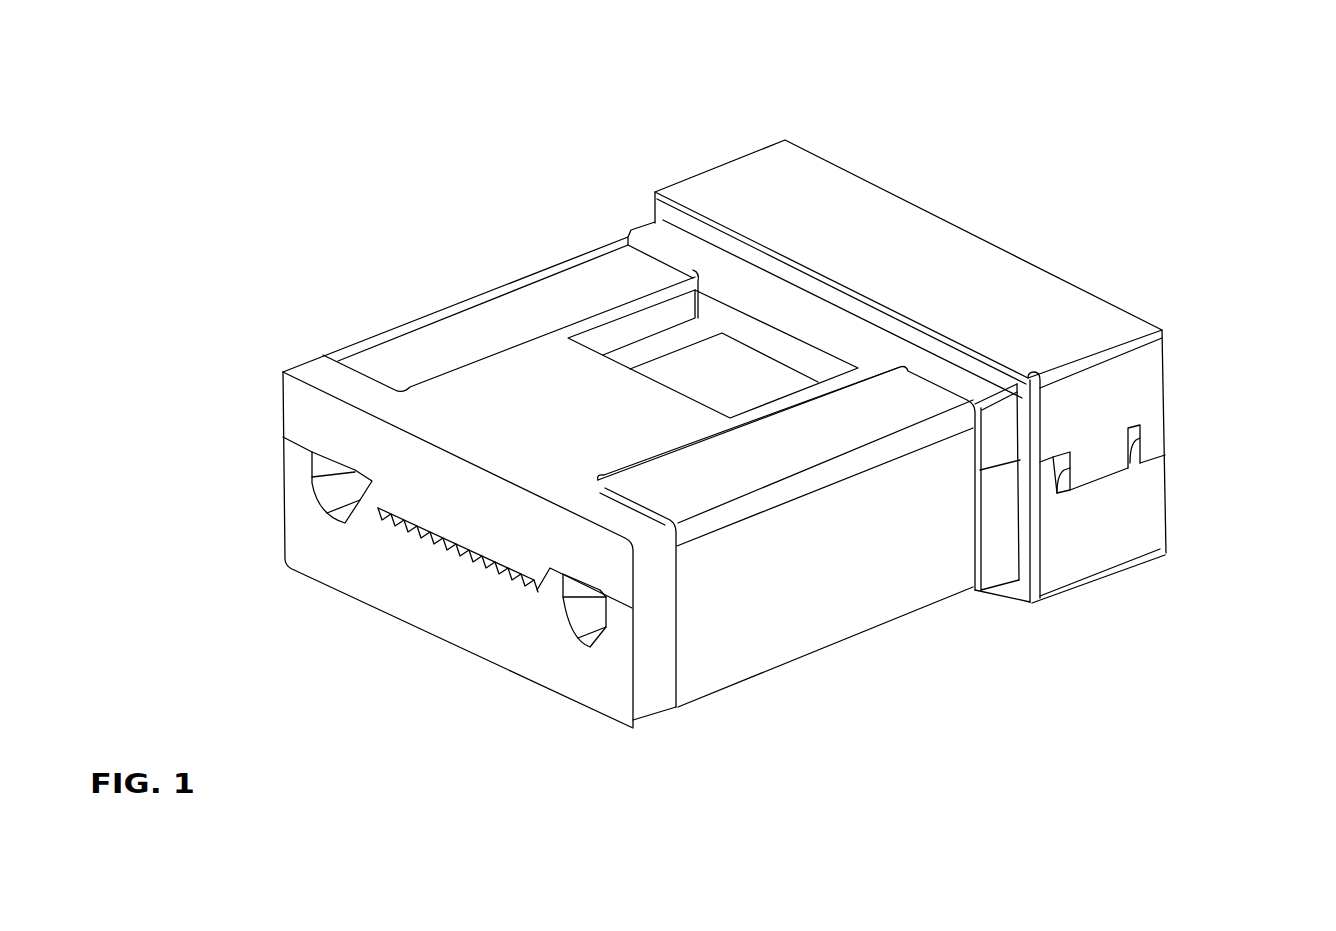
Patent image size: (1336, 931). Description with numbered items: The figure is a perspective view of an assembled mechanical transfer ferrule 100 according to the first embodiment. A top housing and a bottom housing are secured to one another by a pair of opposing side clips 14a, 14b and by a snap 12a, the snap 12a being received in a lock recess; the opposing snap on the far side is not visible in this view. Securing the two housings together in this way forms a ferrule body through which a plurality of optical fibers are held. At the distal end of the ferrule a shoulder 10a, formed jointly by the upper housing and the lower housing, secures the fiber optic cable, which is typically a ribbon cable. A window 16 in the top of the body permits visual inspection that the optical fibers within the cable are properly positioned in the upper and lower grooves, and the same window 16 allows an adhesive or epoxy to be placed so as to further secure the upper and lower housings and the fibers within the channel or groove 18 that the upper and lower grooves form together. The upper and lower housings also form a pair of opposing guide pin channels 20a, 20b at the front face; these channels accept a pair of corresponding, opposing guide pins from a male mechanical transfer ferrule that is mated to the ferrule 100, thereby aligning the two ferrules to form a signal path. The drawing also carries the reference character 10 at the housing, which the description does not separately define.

The mechanical transfer ferrule 100 is at (125, 114).
The housing 10 is at (630, 175).
The shoulder 10a is at (908, 259).
The snap 12a is at (1103, 457).
The side clip 14a is at (829, 553).
The side clip 14b is at (525, 315).
The window 16 is at (713, 354).
The channel or groove 18 is at (417, 524).
The guide pin channel 20a is at (337, 486).
The guide pin channel 20b is at (585, 613).